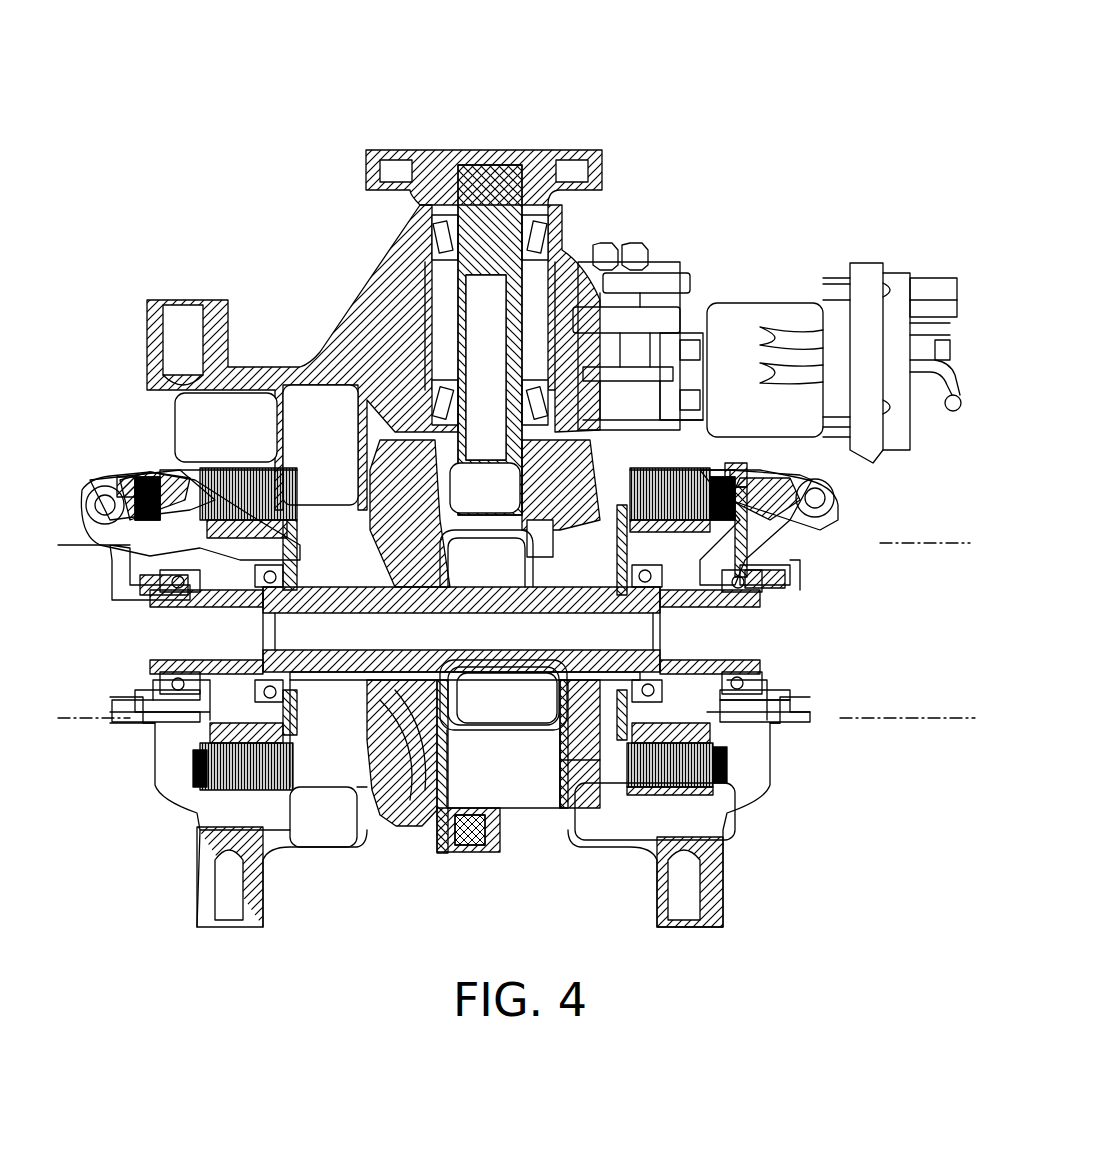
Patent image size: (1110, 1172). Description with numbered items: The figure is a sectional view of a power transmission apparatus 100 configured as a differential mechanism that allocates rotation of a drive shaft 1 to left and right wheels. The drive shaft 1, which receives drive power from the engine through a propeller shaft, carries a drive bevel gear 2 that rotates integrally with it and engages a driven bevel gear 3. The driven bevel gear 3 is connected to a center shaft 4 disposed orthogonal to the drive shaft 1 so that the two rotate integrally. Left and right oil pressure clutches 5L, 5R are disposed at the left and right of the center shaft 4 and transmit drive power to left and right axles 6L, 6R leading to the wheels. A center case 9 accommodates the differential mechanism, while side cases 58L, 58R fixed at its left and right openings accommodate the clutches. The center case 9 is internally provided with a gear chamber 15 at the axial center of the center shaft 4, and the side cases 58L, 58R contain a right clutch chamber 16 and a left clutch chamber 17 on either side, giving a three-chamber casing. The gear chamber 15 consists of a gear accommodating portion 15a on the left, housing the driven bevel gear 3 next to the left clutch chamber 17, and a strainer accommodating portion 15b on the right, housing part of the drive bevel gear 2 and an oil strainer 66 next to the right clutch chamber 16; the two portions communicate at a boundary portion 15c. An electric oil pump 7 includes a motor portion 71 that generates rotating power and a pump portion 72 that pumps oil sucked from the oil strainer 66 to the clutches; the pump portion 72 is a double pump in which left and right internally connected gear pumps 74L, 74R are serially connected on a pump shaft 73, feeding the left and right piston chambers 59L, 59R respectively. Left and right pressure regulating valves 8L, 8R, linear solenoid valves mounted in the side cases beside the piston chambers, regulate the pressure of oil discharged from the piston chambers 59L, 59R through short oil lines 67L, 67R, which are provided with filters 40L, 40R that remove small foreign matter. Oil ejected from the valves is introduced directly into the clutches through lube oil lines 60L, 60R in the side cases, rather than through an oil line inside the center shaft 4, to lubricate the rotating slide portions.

The power transmission apparatus 100 is at (482, 95).
The drive shaft 1 is at (583, 262).
The drive bevel gear 2 is at (566, 492).
The driven bevel gear 3 is at (440, 517).
The center shaft 4 is at (478, 600).
The left oil pressure clutch 5L is at (245, 455).
The right oil pressure clutch 5R is at (650, 462).
The left axle 6L is at (80, 718).
The right axle 6R is at (838, 720).
The electric oil pump 7 is at (878, 212).
The left pressure regulating valve 8L is at (100, 488).
The right pressure regulating valve 8R is at (838, 518).
The center case 9 is at (335, 330).
The gear chamber 15 is at (513, 800).
The gear accommodating portion 15a is at (420, 810).
The strainer accommodating portion 15b is at (550, 810).
The boundary portion 15c is at (450, 745).
The right clutch chamber 16 is at (595, 822).
The left clutch chamber 17 is at (305, 825).
The left filter 40L is at (100, 548).
The right filter 40R is at (840, 548).
The left side case 58L is at (118, 470).
The right side case 58R is at (845, 508).
The left piston chamber 59L is at (155, 480).
The right piston chamber 59R is at (870, 470).
The left lube oil line 60L is at (152, 602).
The right lube oil line 60R is at (830, 560).
The oil strainer 66 is at (535, 745).
The left oil line 67L is at (112, 473).
The right oil line 67R is at (840, 490).
The motor portion 71 is at (820, 262).
The pump portion 72 is at (672, 262).
The pump shaft 73 is at (708, 292).
The left internally connected gear pump 74L is at (593, 303).
The right internally connected gear pump 74R is at (632, 310).